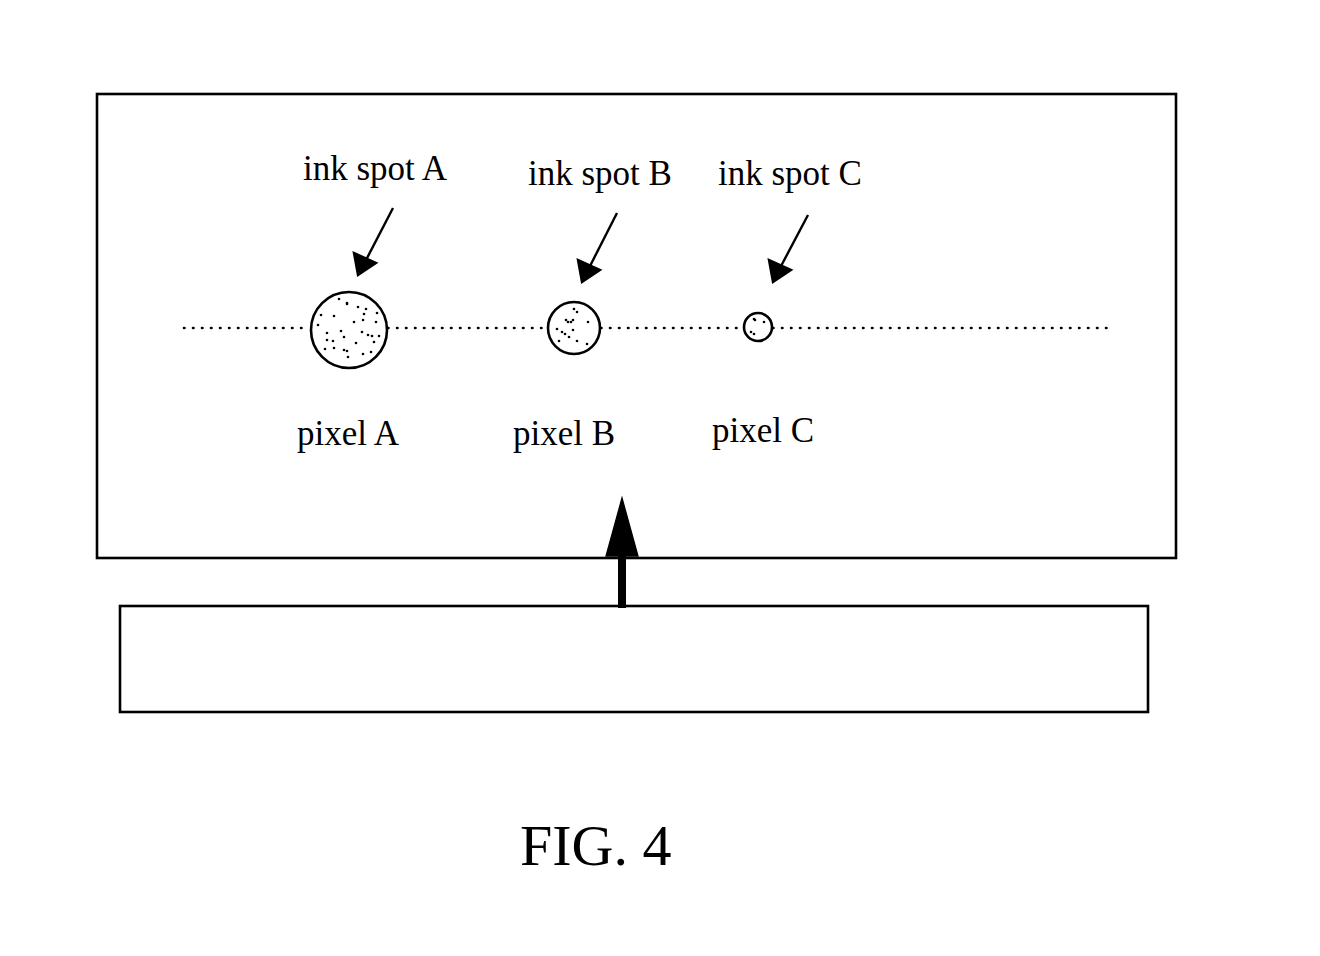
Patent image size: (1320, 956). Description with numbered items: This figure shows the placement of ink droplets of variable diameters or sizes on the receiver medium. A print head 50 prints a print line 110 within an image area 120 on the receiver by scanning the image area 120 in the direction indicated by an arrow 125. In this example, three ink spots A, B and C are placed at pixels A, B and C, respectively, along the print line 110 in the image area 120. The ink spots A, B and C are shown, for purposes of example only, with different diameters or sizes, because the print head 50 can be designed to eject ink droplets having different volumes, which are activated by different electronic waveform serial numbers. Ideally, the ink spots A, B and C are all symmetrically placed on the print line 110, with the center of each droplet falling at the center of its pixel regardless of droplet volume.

The image area 120 is at (1178, 140).
The print line 110 is at (1092, 318).
The arrow 125 is at (626, 577).
The print head 50 is at (1135, 662).